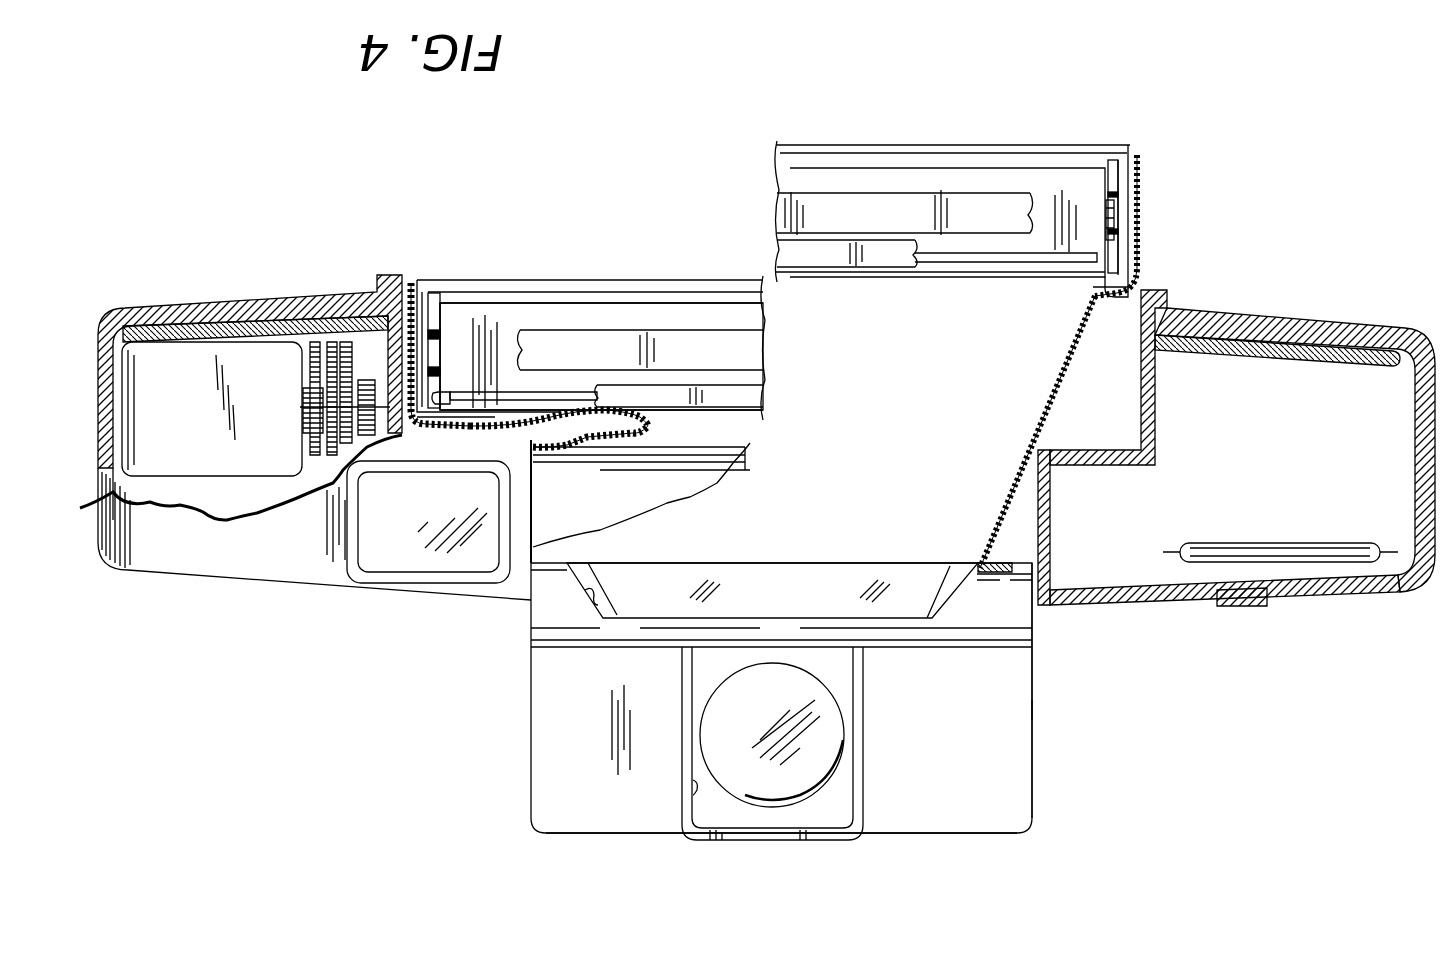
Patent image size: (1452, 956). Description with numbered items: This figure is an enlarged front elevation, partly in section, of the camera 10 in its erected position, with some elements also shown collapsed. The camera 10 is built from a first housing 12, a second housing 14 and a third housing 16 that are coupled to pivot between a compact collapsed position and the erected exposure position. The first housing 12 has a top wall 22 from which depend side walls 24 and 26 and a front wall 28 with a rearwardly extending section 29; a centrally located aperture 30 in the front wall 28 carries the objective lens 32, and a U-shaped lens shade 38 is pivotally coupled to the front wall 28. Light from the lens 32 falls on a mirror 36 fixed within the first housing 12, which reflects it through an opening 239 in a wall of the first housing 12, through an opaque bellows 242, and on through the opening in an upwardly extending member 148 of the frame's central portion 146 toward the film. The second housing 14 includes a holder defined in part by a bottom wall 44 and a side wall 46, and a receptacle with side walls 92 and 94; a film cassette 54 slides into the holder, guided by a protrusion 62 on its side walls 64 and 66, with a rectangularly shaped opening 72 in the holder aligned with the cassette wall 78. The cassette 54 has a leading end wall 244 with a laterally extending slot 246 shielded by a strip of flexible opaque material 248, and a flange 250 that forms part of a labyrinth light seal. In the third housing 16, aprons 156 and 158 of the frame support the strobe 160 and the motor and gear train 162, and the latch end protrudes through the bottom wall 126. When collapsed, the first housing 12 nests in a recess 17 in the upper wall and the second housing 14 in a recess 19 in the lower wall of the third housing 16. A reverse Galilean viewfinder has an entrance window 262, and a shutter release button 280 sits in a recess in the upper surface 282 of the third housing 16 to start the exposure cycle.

The camera 10 is at (1252, 842).
The first housing 12 is at (1135, 708).
The second housing 14 is at (1215, 132).
The third housing 16 is at (1357, 312).
The recess 17 is at (1040, 541).
The recess 19 is at (1135, 333).
The top wall 22 is at (938, 838).
The side wall 24 is at (1034, 755).
The side wall 26 is at (531, 778).
The front wall 28 is at (790, 490).
The rearwardly extending section 29 is at (1015, 612).
The aperture 30 is at (810, 678).
The objective lens 32 is at (765, 790).
The mirror 36 is at (877, 573).
The lens shade 38 is at (690, 795).
The bottom wall 44 is at (542, 282).
The side wall 46 is at (1130, 152).
The film cassette 54 is at (925, 317).
The protrusion 62 is at (435, 293).
The side wall 64 is at (1108, 255).
The side wall 66 is at (436, 395).
The rectangularly shaped opening 72 is at (420, 300).
The wall 78 is at (733, 416).
The side wall 92 is at (1140, 270).
The side wall 94 is at (409, 283).
The bottom wall 126 is at (1243, 317).
The central portion 146 is at (1134, 466).
The upwardly extending member 148 is at (1051, 563).
The apron 156 is at (1301, 355).
The apron 158 is at (160, 337).
The strobe 160 is at (1302, 543).
The motor and gear train 162 is at (152, 490).
The opening 239 is at (590, 603).
The opaque bellows 242 is at (645, 430).
The leading end wall 244 is at (600, 320).
The slot 246 is at (542, 393).
The strip of flexible opaque material 248 is at (757, 395).
The flange 250 is at (750, 352).
The entrance window 262 is at (388, 557).
The shutter release button 280 is at (1262, 606).
The upper surface 282 is at (1123, 606).